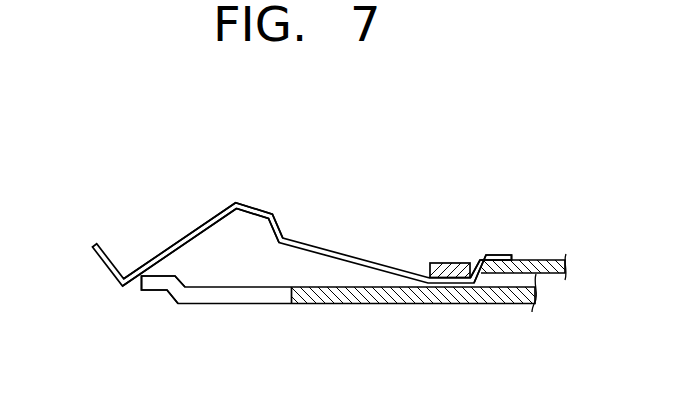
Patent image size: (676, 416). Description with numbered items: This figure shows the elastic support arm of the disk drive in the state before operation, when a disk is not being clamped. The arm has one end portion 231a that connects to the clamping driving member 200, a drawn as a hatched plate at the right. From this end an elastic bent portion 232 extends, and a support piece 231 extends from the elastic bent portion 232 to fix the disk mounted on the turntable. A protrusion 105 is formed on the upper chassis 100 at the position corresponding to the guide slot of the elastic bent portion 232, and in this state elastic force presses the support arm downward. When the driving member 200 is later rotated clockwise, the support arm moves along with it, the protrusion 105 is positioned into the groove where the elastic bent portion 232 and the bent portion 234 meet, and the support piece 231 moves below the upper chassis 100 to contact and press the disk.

The upper chassis 100 is at (365, 305).
The protrusion 105 is at (155, 293).
The clamping driving member 200 is at (538, 260).
The support piece 231 is at (114, 260).
The elastic bent portion 232 is at (253, 203).
The bent portion 234 is at (280, 222).
The one end portion 231a is at (497, 253).